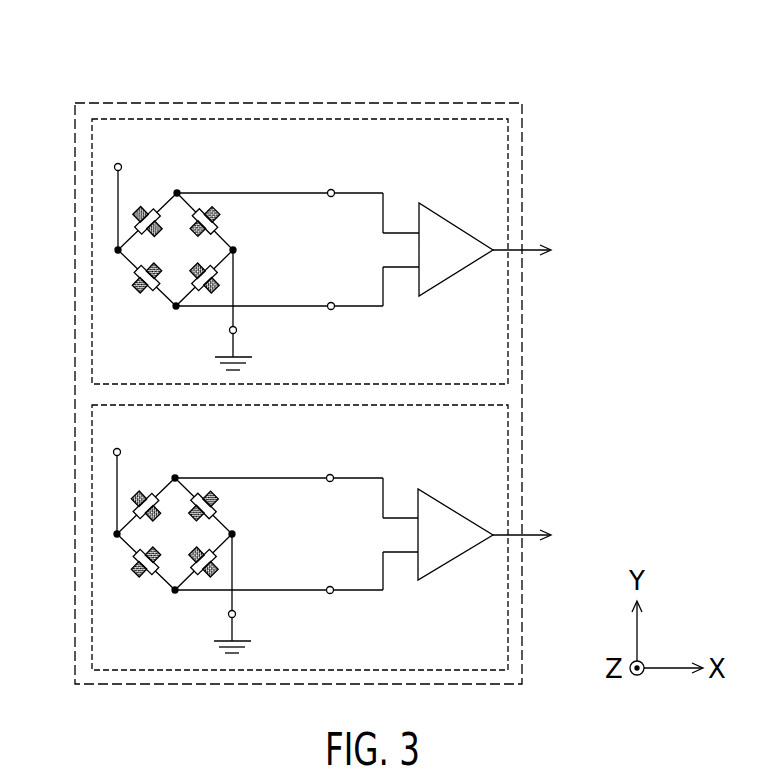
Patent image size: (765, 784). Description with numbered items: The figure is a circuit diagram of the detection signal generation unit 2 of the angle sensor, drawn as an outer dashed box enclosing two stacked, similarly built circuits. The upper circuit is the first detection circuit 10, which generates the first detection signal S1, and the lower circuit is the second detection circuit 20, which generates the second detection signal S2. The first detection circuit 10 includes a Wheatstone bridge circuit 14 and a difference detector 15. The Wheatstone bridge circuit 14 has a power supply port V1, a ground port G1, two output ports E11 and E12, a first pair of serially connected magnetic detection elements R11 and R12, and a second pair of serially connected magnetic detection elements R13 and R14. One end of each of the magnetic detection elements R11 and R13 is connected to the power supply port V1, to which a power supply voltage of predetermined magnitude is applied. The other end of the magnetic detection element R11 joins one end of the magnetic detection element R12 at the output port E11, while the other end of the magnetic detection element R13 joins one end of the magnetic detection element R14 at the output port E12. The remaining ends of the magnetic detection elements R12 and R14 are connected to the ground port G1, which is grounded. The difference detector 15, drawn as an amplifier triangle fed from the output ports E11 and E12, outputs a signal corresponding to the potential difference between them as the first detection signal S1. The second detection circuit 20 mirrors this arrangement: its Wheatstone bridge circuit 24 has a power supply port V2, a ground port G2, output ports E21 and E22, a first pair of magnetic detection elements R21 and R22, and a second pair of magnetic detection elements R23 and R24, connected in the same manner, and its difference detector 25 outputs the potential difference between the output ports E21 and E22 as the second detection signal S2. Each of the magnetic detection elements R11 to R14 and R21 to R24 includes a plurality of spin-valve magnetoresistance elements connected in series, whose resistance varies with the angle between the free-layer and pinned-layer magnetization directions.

The detection signal generation unit 2 is at (277, 99).
The first detection circuit 10 is at (90, 185).
The second detection circuit 20 is at (90, 470).
The Wheatstone bridge circuit 14 is at (196, 229).
The Wheatstone bridge circuit 24 is at (195, 515).
The difference detector 15 is at (455, 224).
The difference detector 25 is at (455, 509).
The magnetic detection element R11 is at (147, 206).
The magnetic detection element R12 is at (224, 218).
The magnetic detection element R13 is at (142, 296).
The magnetic detection element R14 is at (230, 278).
The magnetic detection element R21 is at (146, 491).
The magnetic detection element R22 is at (223, 502).
The magnetic detection element R23 is at (141, 581).
The magnetic detection element R24 is at (230, 562).
The power supply port V1 is at (116, 189).
The power supply port V2 is at (116, 474).
The ground port G1 is at (241, 310).
The ground port G2 is at (240, 593).
The output port E11 is at (330, 176).
The output port E12 is at (330, 325).
The output port E21 is at (330, 461).
The output port E22 is at (330, 610).
The first detection signal S1 is at (541, 252).
The second detection signal S2 is at (541, 537).